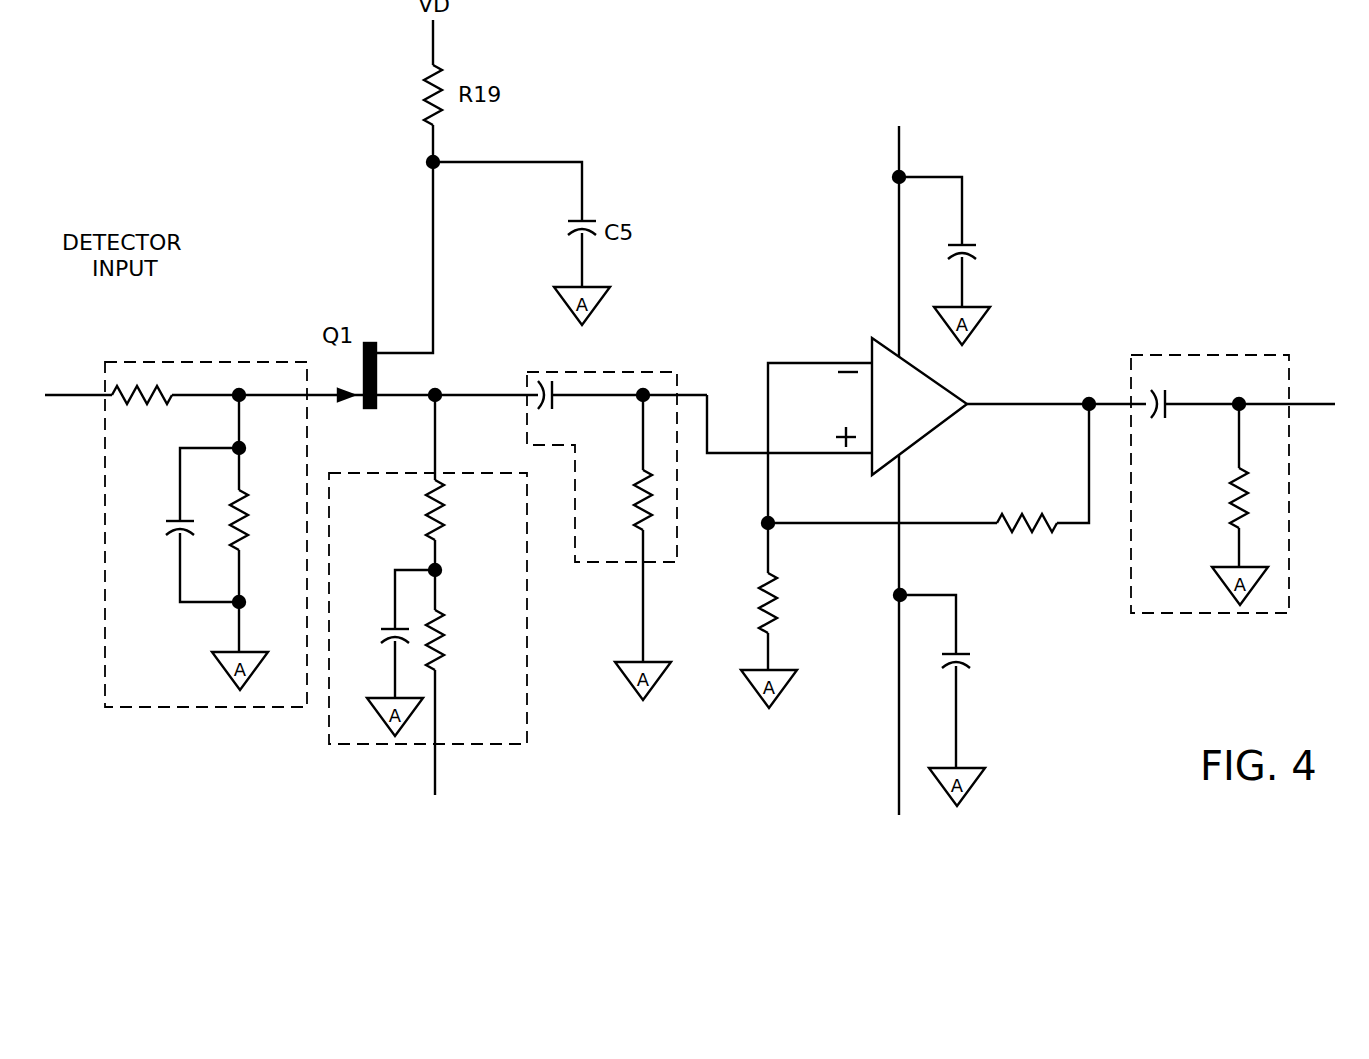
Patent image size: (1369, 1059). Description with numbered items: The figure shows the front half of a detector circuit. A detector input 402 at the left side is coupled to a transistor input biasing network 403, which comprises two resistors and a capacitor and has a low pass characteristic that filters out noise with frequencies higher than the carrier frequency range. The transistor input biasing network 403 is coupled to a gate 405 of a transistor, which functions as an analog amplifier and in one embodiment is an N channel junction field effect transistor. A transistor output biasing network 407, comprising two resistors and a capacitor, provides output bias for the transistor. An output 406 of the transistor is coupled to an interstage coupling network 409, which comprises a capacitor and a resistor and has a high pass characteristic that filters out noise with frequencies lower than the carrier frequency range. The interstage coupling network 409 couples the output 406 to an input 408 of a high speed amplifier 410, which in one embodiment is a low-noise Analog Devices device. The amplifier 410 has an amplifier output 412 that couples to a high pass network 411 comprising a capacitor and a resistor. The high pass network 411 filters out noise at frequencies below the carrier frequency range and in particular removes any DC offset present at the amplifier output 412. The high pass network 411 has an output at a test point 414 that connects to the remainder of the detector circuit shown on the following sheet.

The detector input 402 is at (72, 393).
The transistor input biasing network 403 is at (128, 707).
The gate 405 is at (315, 398).
The output 406 is at (394, 392).
The transistor output biasing network 407 is at (343, 744).
The input 408 is at (850, 456).
The interstage coupling network 409 is at (590, 372).
The high speed amplifier 410 is at (944, 385).
The high pass network 411 is at (1193, 613).
The amplifier output 412 is at (972, 408).
The output TP1 414 is at (1300, 406).